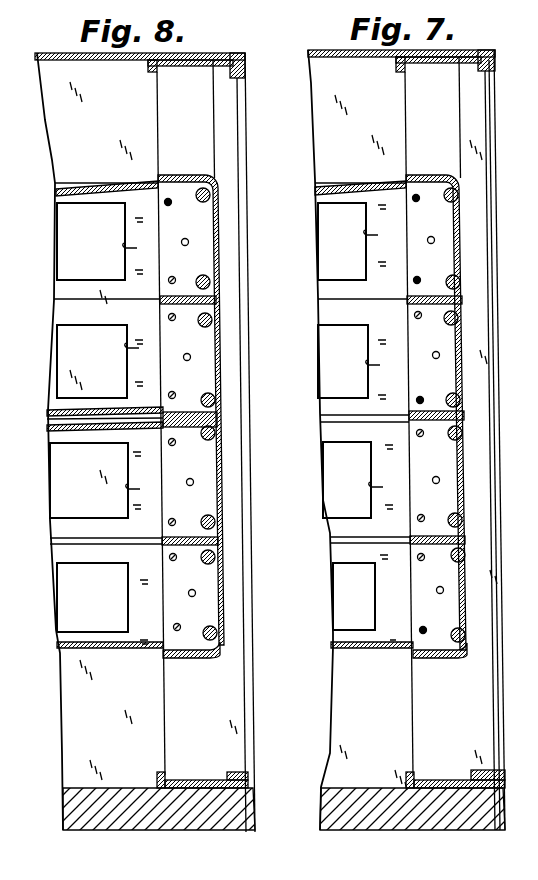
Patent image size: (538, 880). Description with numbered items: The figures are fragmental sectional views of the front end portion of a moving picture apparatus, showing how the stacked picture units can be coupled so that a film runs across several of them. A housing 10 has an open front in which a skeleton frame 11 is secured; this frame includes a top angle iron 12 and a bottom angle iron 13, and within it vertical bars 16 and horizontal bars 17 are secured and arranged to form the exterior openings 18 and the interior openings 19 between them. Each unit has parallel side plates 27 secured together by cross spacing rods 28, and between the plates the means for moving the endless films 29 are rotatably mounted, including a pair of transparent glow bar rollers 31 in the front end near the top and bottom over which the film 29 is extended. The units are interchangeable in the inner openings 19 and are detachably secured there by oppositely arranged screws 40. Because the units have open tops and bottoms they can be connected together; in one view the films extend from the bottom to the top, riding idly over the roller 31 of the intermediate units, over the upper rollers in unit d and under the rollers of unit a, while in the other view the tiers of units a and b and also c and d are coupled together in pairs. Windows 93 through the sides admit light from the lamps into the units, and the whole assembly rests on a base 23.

In FIG. 8, the housing 10 is at (68, 54).
In FIG. 7, the housing 10 is at (327, 52).
In FIG. 8, the skeleton frame 11 is at (251, 158).
In FIG. 7, the skeleton frame 11 is at (483, 280).
In FIG. 8, the top angle iron 12 is at (195, 66).
In FIG. 7, the top angle iron 12 is at (444, 63).
In FIG. 8, the bottom angle iron 13 is at (202, 774).
In FIG. 7, the bottom angle iron 13 is at (455, 773).
In FIG. 8, the vertical bars 16 is at (186, 417).
In FIG. 7, the vertical bars 16 is at (433, 416).
In FIG. 8, the horizontal bars 17 is at (197, 178).
In FIG. 7, the horizontal bars 17 is at (443, 669).
In FIG. 8, the exterior openings 18 is at (153, 431).
In FIG. 7, the exterior openings 18 is at (416, 442).
In FIG. 8, the interior openings 19 is at (140, 431).
In FIG. 7, the interior openings 19 is at (386, 422).
In FIG. 8, the base 23 is at (82, 810).
In FIG. 7, the base 23 is at (335, 807).
In FIG. 8, the side plates 27 is at (58, 290).
In FIG. 7, the side plates 27 is at (328, 288).
In FIG. 8, the cross spacing rods 28 is at (158, 630).
In FIG. 7, the cross spacing rods 28 is at (403, 564).
In FIG. 8, the endless films 29 is at (107, 197).
In FIG. 7, the endless films 29 is at (360, 193).
In FIG. 8, the transparent glow bar rollers 31 is at (199, 414).
In FIG. 7, the transparent glow bar rollers 31 is at (448, 415).
In FIG. 8, the screws 40 is at (183, 246).
In FIG. 7, the screws 40 is at (437, 588).
In FIG. 8, the windows 93 is at (140, 369).
In FIG. 7, the windows 93 is at (382, 362).
In FIG. 8, the unit a is at (66, 597).
In FIG. 7, the unit a is at (348, 600).
In FIG. 8, the unit b is at (63, 488).
In FIG. 7, the unit b is at (336, 484).
In FIG. 8, the tier unit c is at (62, 365).
In FIG. 7, the tier unit c is at (331, 365).
In FIG. 8, the unit d is at (62, 253).
In FIG. 7, the unit d is at (329, 252).